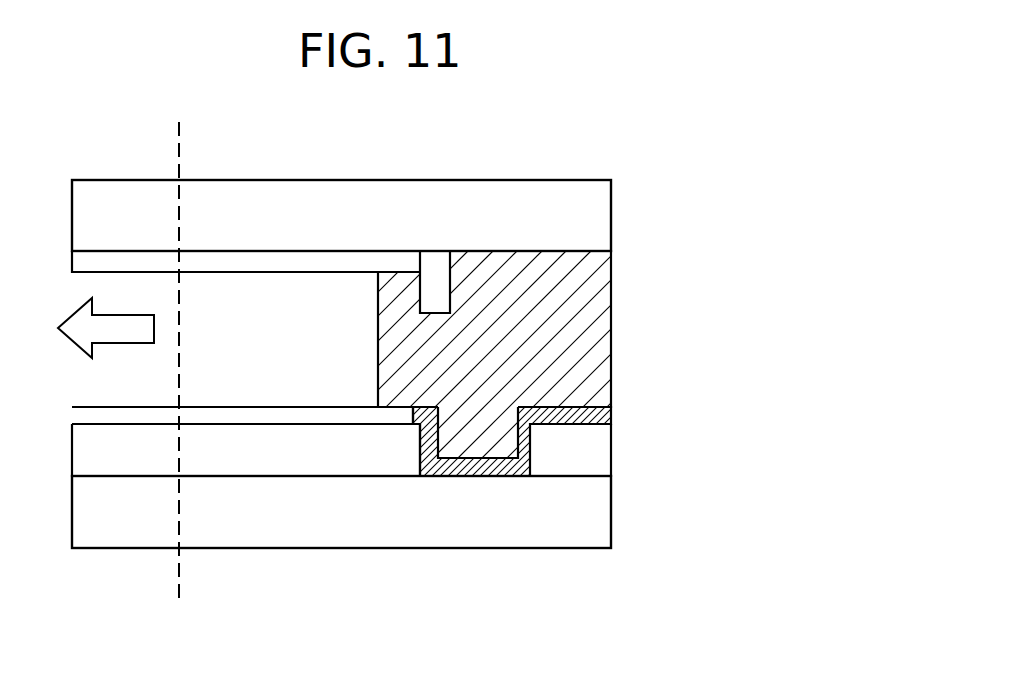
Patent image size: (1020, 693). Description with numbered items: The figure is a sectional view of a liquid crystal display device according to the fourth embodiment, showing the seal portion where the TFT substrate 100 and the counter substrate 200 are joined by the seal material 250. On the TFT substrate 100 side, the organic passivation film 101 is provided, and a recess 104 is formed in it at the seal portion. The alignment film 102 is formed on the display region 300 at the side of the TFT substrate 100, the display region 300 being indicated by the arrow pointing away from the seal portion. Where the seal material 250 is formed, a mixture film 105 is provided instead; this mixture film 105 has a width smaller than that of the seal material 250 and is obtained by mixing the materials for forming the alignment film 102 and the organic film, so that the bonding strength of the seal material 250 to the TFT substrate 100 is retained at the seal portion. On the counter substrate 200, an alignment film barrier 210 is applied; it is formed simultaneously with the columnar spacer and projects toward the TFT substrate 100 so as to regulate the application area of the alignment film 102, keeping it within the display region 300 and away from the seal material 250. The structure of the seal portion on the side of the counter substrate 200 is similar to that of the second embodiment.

The TFT substrate 100 is at (602, 517).
The organic passivation film 101 is at (602, 462).
The alignment film 102 is at (312, 265).
The recess 104 is at (472, 432).
The mixture film 105 is at (602, 415).
The counter substrate 200 is at (602, 222).
The alignment film barrier 210 is at (440, 285).
The seal material 250 is at (592, 318).
The display region 300 is at (118, 344).